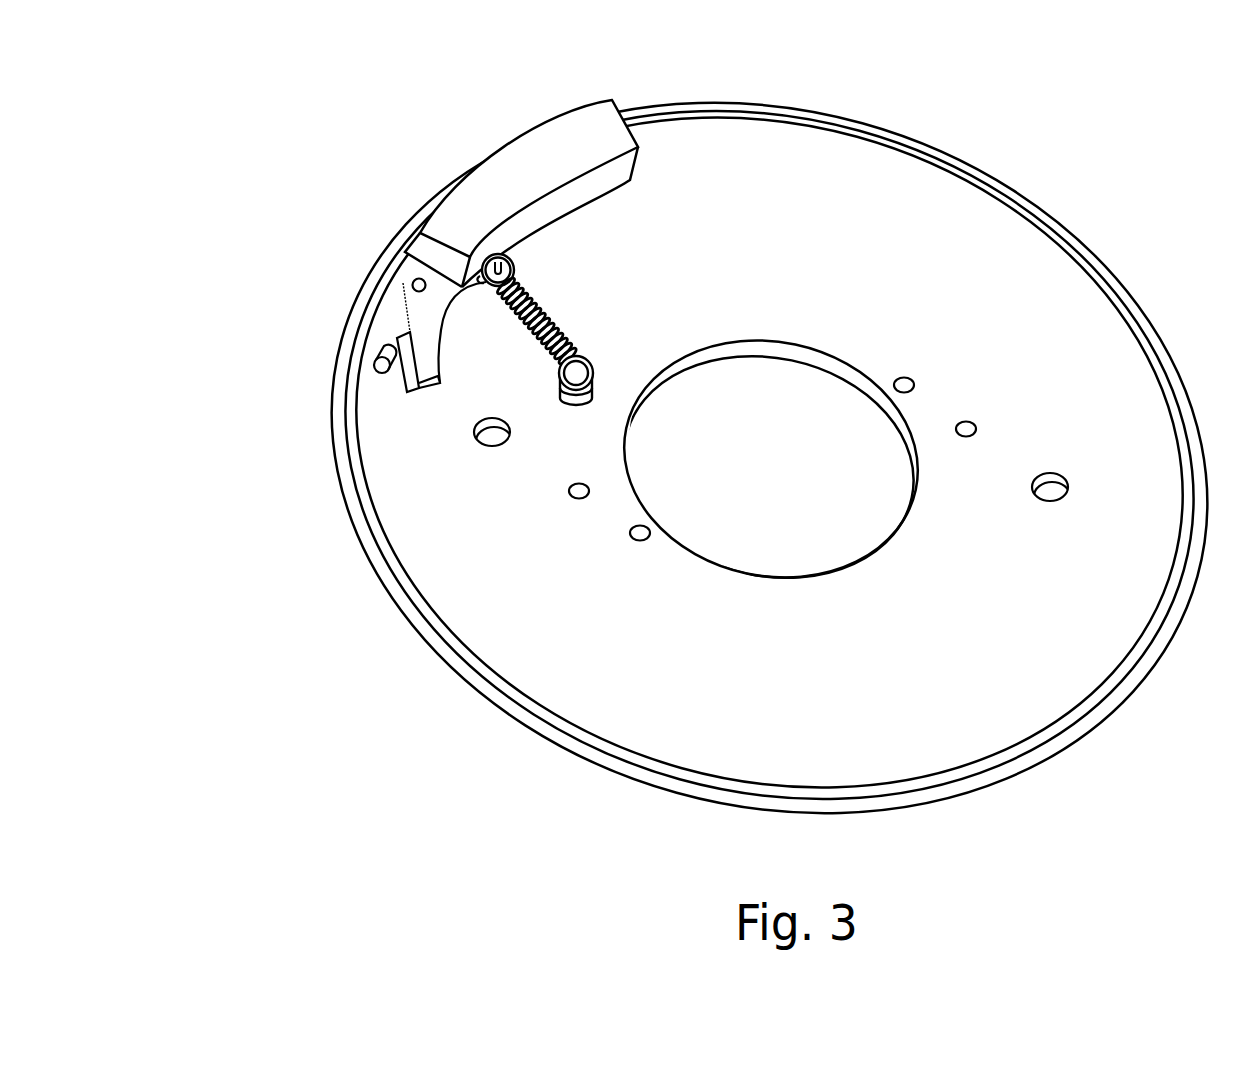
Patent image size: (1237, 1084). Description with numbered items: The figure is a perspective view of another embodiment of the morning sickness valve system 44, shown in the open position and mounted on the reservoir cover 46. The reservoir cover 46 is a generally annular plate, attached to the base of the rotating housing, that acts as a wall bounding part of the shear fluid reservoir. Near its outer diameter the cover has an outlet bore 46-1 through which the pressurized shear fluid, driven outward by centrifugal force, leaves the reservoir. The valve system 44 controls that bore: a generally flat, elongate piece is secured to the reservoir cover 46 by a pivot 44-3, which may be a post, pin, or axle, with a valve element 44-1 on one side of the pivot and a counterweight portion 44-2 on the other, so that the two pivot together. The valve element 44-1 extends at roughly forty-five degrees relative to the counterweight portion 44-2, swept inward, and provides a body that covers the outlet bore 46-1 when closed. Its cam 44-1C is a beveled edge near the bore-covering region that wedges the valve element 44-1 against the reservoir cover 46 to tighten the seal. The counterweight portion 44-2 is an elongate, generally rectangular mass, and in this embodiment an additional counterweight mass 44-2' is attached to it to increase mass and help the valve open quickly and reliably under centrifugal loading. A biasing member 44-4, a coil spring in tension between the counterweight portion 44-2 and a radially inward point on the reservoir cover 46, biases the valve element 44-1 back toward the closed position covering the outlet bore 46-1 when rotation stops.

The morning sickness valve system 44 is at (355, 186).
The valve element 44-1 is at (463, 372).
The cam 44-1C is at (401, 378).
The counterweight portion 44-2 is at (585, 166).
The additional counterweight mass 44-2' is at (548, 151).
The pivot 44-3 is at (412, 286).
The biasing member 44-4 is at (545, 303).
The reservoir cover 46 is at (607, 652).
The outlet bore 46-1 is at (377, 369).